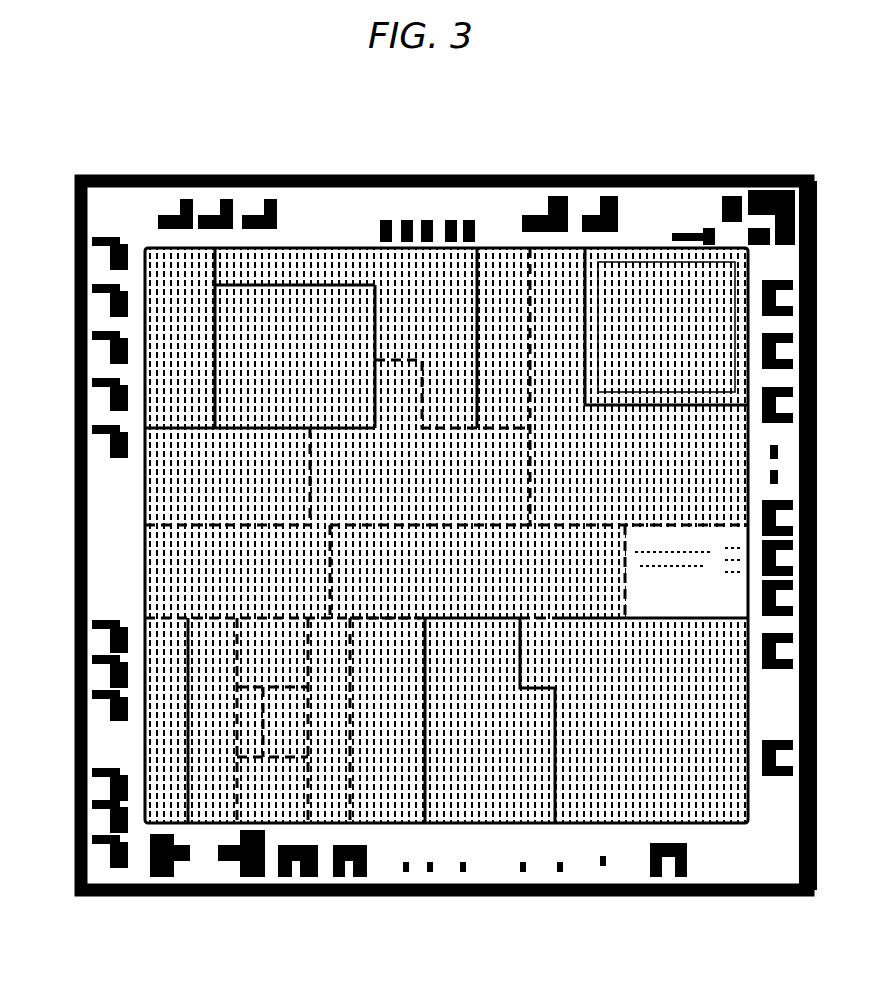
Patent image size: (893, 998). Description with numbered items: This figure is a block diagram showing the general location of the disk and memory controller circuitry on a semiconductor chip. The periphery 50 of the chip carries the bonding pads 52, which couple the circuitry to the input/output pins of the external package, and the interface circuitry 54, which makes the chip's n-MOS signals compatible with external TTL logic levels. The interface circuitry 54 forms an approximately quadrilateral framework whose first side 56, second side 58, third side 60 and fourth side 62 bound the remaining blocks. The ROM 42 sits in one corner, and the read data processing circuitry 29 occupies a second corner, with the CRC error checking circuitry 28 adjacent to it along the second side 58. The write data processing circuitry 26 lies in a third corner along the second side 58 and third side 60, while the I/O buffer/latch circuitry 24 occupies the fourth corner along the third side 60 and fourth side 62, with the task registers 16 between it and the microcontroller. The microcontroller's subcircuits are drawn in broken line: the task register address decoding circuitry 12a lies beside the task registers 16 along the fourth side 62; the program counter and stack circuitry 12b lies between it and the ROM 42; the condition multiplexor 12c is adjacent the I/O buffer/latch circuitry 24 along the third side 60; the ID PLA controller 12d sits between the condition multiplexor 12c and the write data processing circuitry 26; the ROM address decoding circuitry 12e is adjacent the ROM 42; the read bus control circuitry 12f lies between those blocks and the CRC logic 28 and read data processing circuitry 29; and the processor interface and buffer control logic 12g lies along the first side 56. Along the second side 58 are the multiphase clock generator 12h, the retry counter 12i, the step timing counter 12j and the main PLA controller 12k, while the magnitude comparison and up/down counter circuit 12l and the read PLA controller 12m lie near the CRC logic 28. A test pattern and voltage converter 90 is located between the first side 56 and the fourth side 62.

The third side of the interface circuitry 60 is at (138, 308).
The I/O buffer/latch circuitry 24 is at (158, 267).
The interface circuitry 54 is at (213, 215).
The task register address decoding circuitry 12a is at (235, 267).
The condition multiplexor 12c is at (245, 448).
The task registers 16 is at (330, 297).
The periphery 50 is at (368, 228).
The ID PLA controller 12d is at (387, 455).
The program counter and stack circuitry 12b is at (495, 267).
The ROM address decoding circuitry 12e is at (545, 267).
The fourth side of the interface circuitry 62 is at (565, 232).
The ROM 42 is at (660, 303).
The test pattern and voltage converter 90 is at (707, 223).
The first side of the interface circuitry 56 is at (758, 280).
The write data processing circuitry 26 is at (152, 808).
The multiphase clock generator 12h is at (200, 812).
The step timing counter 12j is at (245, 806).
The main PLA controller 12k is at (246, 808).
The retry counter 12i is at (300, 670).
The second side of the interface circuitry 58 is at (375, 838).
The magnitude comparison and up/down counter circuit 12l is at (410, 806).
The CRC error checking circuitry 28 is at (447, 815).
The bonding pads 52 is at (470, 872).
The read PLA controller 12m is at (542, 678).
The read bus control circuitry 12f is at (598, 600).
The read data processing circuitry 29 is at (688, 808).
The processor interface and buffer control logic 12g is at (703, 608).